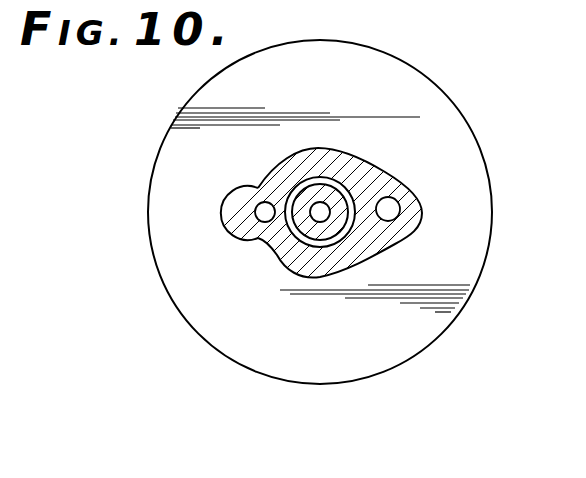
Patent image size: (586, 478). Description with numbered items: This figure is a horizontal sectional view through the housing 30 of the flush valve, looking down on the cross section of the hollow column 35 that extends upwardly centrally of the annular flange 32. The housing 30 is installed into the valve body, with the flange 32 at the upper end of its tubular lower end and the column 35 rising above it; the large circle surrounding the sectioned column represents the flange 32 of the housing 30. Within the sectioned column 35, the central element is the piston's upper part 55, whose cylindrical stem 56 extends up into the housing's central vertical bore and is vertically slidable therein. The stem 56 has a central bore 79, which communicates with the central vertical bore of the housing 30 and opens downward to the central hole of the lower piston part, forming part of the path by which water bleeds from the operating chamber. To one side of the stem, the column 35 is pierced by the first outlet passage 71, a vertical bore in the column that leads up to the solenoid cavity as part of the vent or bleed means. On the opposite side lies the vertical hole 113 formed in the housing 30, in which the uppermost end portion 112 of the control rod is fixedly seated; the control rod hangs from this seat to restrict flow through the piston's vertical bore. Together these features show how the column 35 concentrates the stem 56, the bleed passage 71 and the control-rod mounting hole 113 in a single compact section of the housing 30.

The housing 30 is at (148, 218).
The annular flange 32 is at (447, 112).
The hollow column 35 is at (380, 176).
The upper part of the piston 55 is at (322, 181).
The cylindrical stem 56 is at (327, 234).
The first outlet passage 71 is at (398, 210).
The central bore 79 is at (315, 214).
The uppermost end portion 112 is at (258, 204).
The vertical hole 113 is at (268, 232).